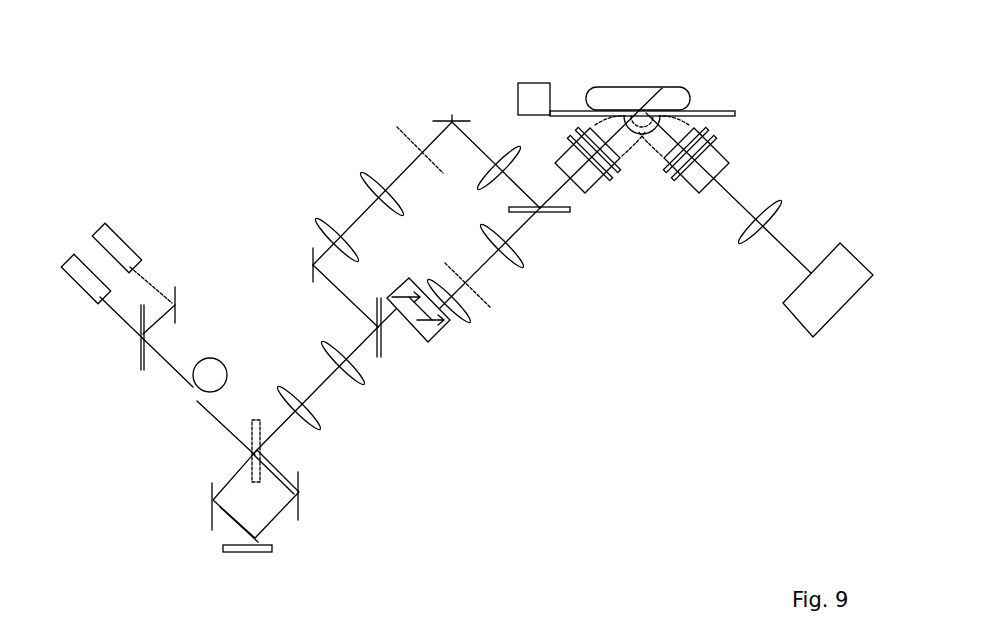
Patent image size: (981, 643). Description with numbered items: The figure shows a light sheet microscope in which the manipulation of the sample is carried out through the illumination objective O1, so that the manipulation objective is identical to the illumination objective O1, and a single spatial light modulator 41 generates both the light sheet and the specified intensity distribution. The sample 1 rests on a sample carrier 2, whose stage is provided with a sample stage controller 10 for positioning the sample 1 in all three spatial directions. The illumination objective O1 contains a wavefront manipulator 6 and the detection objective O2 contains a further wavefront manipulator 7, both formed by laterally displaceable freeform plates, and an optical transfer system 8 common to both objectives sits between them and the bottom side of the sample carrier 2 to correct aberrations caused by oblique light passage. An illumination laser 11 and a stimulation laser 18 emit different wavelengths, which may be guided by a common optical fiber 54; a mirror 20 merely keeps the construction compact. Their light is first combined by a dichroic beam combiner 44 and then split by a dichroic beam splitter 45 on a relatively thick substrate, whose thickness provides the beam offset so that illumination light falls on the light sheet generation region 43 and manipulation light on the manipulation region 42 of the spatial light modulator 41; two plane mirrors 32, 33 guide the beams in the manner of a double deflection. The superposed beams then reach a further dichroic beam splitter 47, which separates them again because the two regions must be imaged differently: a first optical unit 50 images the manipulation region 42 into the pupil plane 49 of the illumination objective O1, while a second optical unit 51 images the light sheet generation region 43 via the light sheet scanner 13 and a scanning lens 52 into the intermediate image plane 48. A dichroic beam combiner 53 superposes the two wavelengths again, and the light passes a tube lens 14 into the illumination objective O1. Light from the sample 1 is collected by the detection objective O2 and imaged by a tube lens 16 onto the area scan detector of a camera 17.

The sample 1 is at (618, 88).
The sample carrier 2 is at (726, 111).
The wavefront manipulator 6 is at (622, 178).
The further wavefront manipulator 7 is at (712, 130).
The optical transfer system 8 is at (648, 132).
The sample stage controller 10 is at (536, 83).
The illumination laser 11 is at (84, 296).
The light sheet scanner 13 is at (418, 342).
The tube lens 14 is at (503, 150).
The tube lens 16 is at (745, 240).
The camera 17 is at (800, 322).
The stimulation laser 18 is at (122, 242).
The mirror 20 is at (313, 277).
The plane mirror 32 is at (210, 520).
The plane mirror 33 is at (300, 520).
The spatial light modulator 41 is at (275, 549).
The manipulation region 42 is at (242, 554).
The light sheet generation region 43 is at (253, 554).
The dichroic beam combiner 44 is at (140, 365).
The dichroic beam splitter 45 is at (250, 445).
The further dichroic beam splitter 47 is at (380, 357).
The intermediate image plane 48 is at (490, 307).
The pupil plane 49 is at (400, 128).
The first optical unit 50 is at (318, 230).
The second optical unit 51 is at (325, 355).
The scanning lens 52 is at (460, 322).
The dichroic beam combiner 53 is at (558, 213).
The common optical fiber 54 is at (197, 403).
The illumination objective O1 is at (588, 190).
The detection objective O2 is at (720, 165).